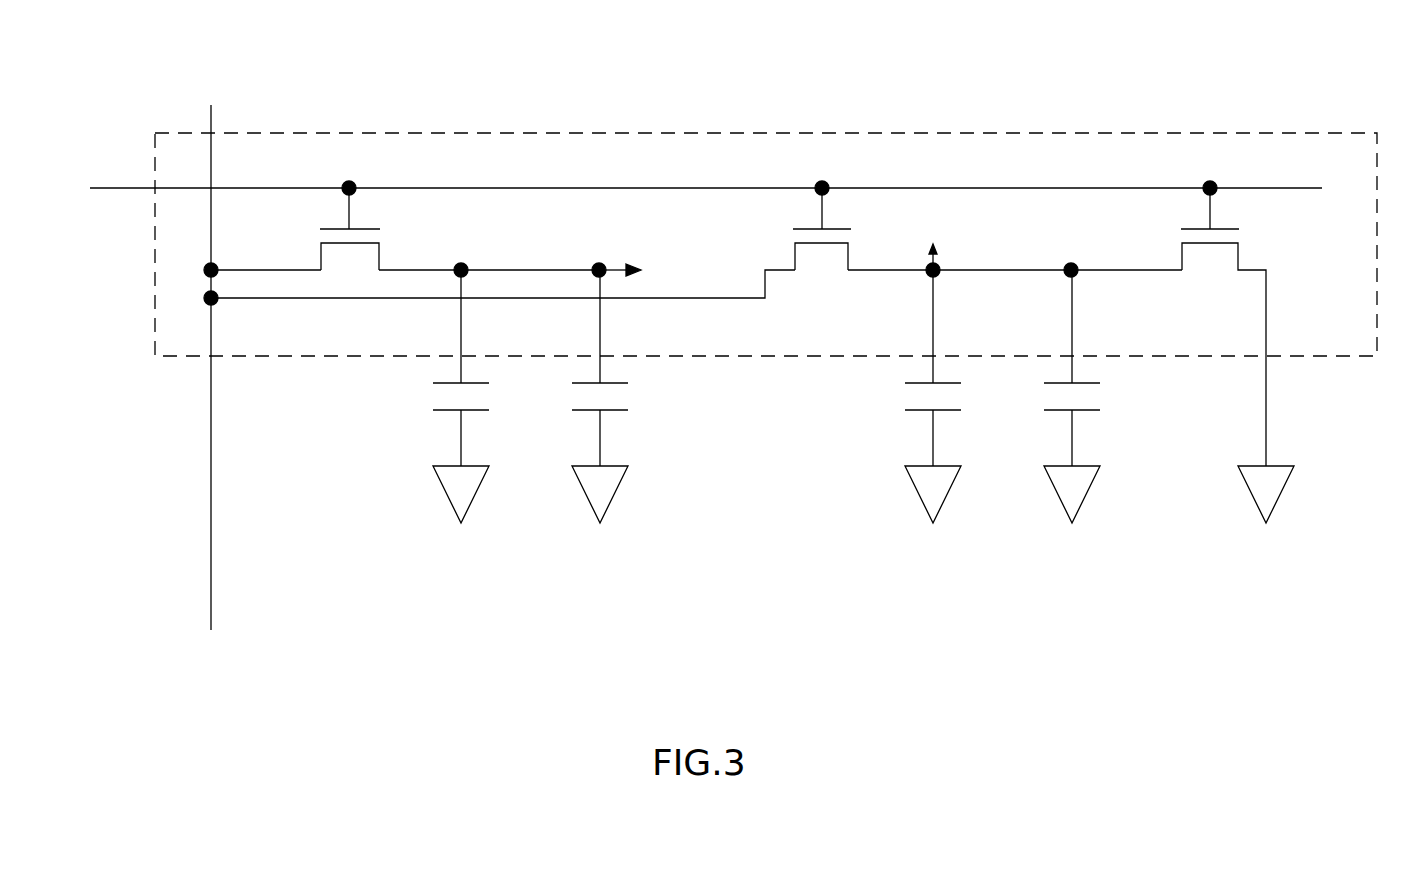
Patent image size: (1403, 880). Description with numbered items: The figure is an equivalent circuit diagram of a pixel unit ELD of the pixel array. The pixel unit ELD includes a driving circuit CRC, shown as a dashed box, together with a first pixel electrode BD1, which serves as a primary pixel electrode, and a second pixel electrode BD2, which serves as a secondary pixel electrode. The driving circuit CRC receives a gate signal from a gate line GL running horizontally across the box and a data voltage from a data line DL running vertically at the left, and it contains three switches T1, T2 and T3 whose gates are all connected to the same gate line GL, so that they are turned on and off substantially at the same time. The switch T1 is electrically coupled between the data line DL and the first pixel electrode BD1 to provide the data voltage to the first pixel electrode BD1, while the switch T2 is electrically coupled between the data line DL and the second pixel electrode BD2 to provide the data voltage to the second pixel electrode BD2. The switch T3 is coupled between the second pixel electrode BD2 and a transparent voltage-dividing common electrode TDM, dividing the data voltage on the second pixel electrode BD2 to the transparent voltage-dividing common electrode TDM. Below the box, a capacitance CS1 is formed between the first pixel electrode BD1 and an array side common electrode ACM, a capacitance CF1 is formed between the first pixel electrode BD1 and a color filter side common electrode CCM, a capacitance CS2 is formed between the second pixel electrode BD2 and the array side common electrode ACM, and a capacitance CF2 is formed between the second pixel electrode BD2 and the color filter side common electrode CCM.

The pixel unit ELD is at (150, 75).
The driving circuit CRC is at (430, 131).
The data line DL is at (209, 355).
The gate line GL is at (689, 189).
The switch T1 is at (328, 225).
The switch T2 is at (822, 249).
The switch T3 is at (1200, 323).
The first pixel electrode BD1 is at (660, 273).
The second pixel electrode BD2 is at (933, 231).
The capacitance CS1 is at (417, 368).
The capacitance CF1 is at (641, 368).
The capacitance CS2 is at (890, 371).
The capacitance CF2 is at (1115, 368).
The array side common electrode ACM is at (692, 524).
The color filter side common electrode CCM is at (832, 524).
The transparent voltage-dividing common electrode TDM is at (1263, 524).